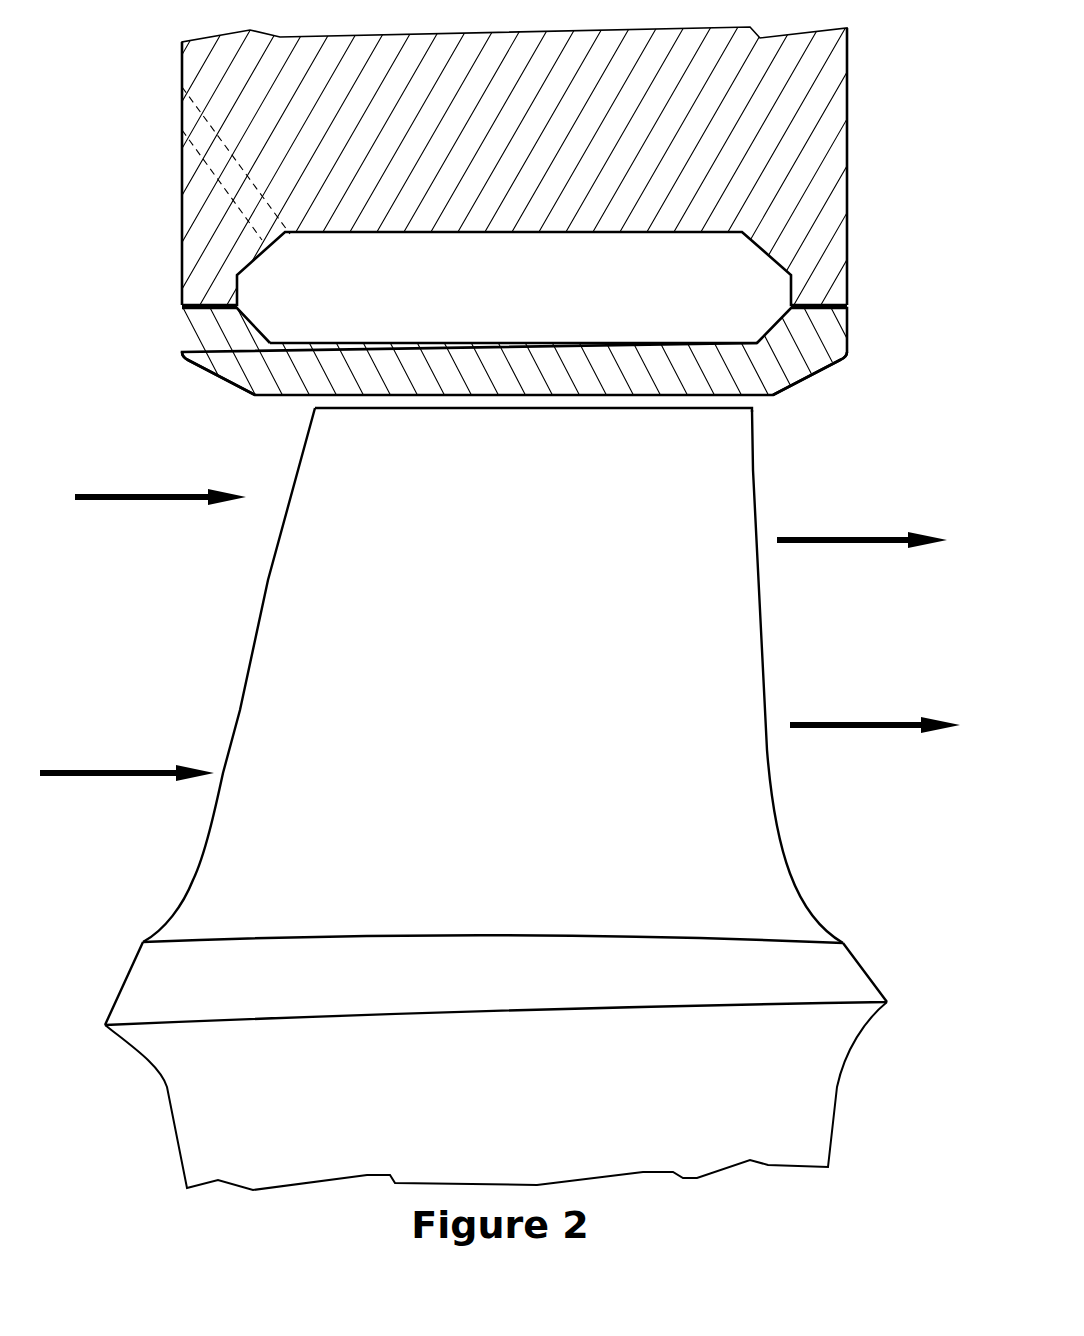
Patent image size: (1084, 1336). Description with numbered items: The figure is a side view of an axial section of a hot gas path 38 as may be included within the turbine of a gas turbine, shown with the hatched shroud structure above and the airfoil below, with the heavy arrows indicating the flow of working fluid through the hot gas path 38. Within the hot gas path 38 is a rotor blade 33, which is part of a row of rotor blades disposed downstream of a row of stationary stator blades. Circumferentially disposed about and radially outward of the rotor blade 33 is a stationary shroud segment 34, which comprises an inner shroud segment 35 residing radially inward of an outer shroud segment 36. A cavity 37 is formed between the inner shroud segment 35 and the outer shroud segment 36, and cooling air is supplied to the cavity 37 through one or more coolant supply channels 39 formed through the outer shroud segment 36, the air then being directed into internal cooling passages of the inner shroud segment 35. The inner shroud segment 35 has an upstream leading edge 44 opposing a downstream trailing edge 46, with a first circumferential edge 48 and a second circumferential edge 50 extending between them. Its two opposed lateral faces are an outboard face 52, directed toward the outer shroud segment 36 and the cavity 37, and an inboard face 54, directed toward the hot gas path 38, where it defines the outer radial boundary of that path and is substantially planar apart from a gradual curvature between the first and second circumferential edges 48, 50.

The rotor blade 33 is at (504, 813).
The stationary shroud segment 34 is at (523, 181).
The inner shroud segment 35 is at (530, 373).
The outer shroud segment 36 is at (506, 146).
The cavity 37 is at (493, 275).
The hot gas path 38 is at (131, 575).
The coolant supply channel 39 is at (228, 196).
The leading edge 44 is at (182, 326).
The trailing edge 46 is at (848, 323).
The first circumferential edge 48 is at (674, 383).
The second circumferential edge 50 is at (860, 339).
The outboard face 52 is at (605, 343).
The inboard face 54 is at (281, 395).